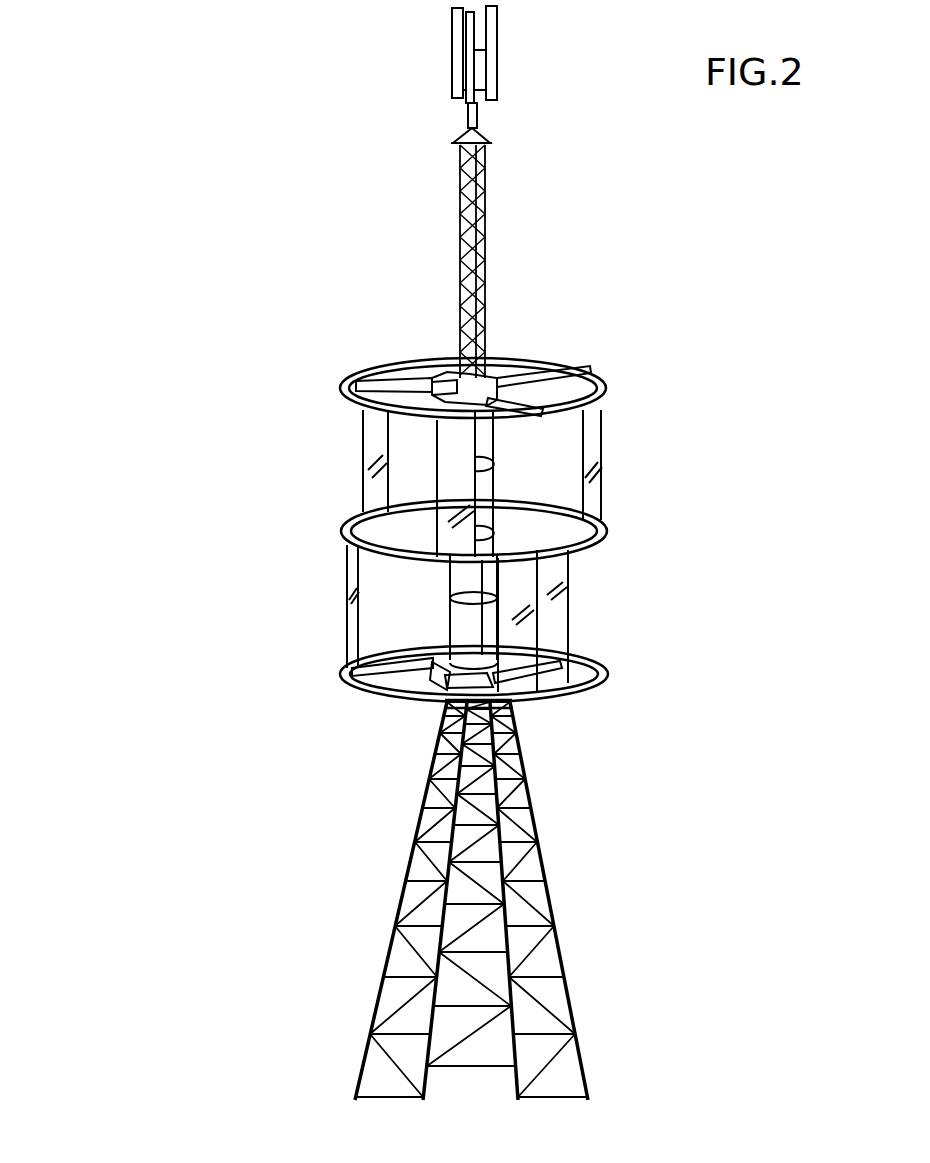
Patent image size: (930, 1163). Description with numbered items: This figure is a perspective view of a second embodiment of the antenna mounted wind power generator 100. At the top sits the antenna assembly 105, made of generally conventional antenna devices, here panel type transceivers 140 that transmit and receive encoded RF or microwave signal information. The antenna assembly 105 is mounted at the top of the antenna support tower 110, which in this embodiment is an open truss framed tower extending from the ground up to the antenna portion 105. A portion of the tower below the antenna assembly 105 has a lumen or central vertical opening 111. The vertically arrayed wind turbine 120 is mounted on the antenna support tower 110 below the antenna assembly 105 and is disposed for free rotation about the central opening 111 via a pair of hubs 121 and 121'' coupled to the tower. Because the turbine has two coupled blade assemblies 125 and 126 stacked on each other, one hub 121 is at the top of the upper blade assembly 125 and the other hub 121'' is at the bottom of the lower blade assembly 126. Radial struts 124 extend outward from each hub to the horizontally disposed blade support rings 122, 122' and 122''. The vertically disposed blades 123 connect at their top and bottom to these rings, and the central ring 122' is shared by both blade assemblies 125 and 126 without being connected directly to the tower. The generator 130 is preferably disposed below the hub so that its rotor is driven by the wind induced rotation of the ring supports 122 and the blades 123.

The antenna mounted wind power generator 100 is at (300, 168).
The antenna assembly 105 is at (440, 92).
The antenna support tower 110 is at (614, 868).
The central vertical opening 111 is at (387, 320).
The vertically arrayed wind turbine 120 is at (240, 608).
The hub 121 is at (416, 697).
The hub 121'' is at (431, 364).
The blade support ring 122 is at (555, 697).
The blade support ring 122' is at (402, 496).
The blade support ring 122'' is at (562, 377).
The blades 123 is at (596, 456).
The radial struts 124 is at (533, 368).
The upper blade assembly 125 is at (695, 387).
The lower blade assembly 126 is at (700, 677).
The generator 130 is at (420, 722).
The panel type transceivers 140 is at (505, 76).